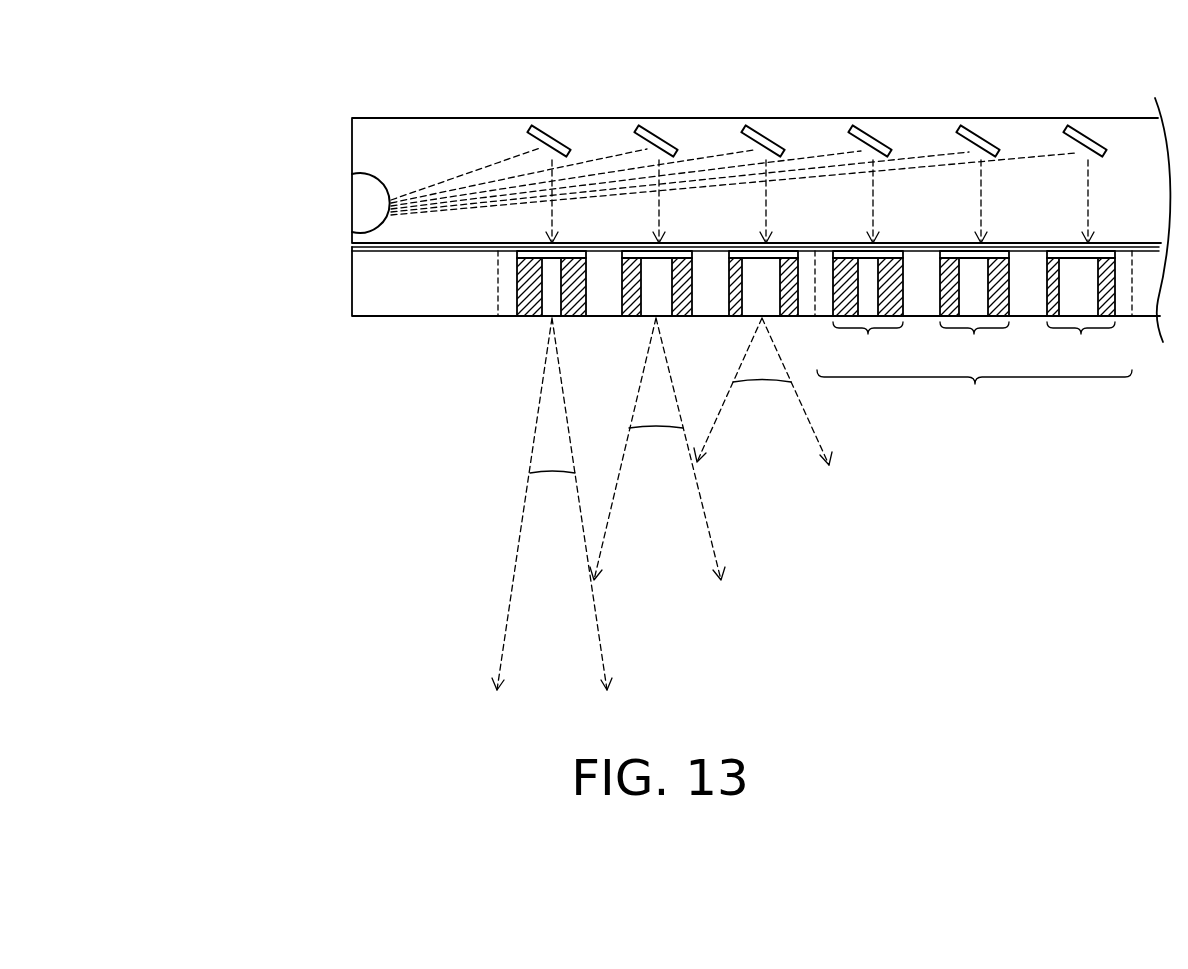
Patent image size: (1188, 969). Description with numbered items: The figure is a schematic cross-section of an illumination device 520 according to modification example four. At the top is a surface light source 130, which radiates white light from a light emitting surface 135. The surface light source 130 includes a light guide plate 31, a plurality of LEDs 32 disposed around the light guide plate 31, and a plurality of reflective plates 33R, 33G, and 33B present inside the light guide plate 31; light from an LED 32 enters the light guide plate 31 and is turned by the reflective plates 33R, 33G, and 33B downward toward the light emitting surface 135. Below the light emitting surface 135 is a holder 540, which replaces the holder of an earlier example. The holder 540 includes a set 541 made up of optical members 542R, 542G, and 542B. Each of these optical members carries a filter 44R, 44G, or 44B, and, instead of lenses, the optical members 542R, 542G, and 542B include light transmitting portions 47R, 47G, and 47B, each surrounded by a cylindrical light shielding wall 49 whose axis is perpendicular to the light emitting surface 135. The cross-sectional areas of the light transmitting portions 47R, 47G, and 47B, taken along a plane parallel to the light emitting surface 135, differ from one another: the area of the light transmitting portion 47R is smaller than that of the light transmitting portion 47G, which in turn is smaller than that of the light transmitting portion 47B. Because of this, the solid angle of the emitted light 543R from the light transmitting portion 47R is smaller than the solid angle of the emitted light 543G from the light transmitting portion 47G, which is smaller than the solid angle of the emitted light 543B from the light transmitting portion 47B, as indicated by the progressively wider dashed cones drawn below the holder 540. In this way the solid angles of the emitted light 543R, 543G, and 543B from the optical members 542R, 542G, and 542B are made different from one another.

The illumination device 520 is at (270, 46).
The surface light source 130 is at (326, 141).
The light guide plate 31 is at (405, 130).
The LED 32 is at (363, 203).
The light emitting surface 135 is at (382, 250).
The holder 540 is at (363, 287).
The light shielding wall 49 is at (525, 303).
The filter 44R is at (530, 250).
The filter 44G is at (636, 250).
The filter 44B is at (742, 250).
The reflective plate 33R is at (548, 136).
The reflective plate 33G is at (655, 136).
The reflective plate 33B is at (761, 136).
The light transmitting portion 47R is at (553, 292).
The light transmitting portion 47G is at (660, 292).
The light transmitting portion 47B is at (768, 292).
The optical member 542R is at (868, 342).
The optical member 542G is at (974, 342).
The optical member 542B is at (1081, 342).
The set 541 is at (974, 388).
The emitted light 543R is at (510, 620).
The emitted light 543G is at (715, 540).
The emitted light 543B is at (818, 435).